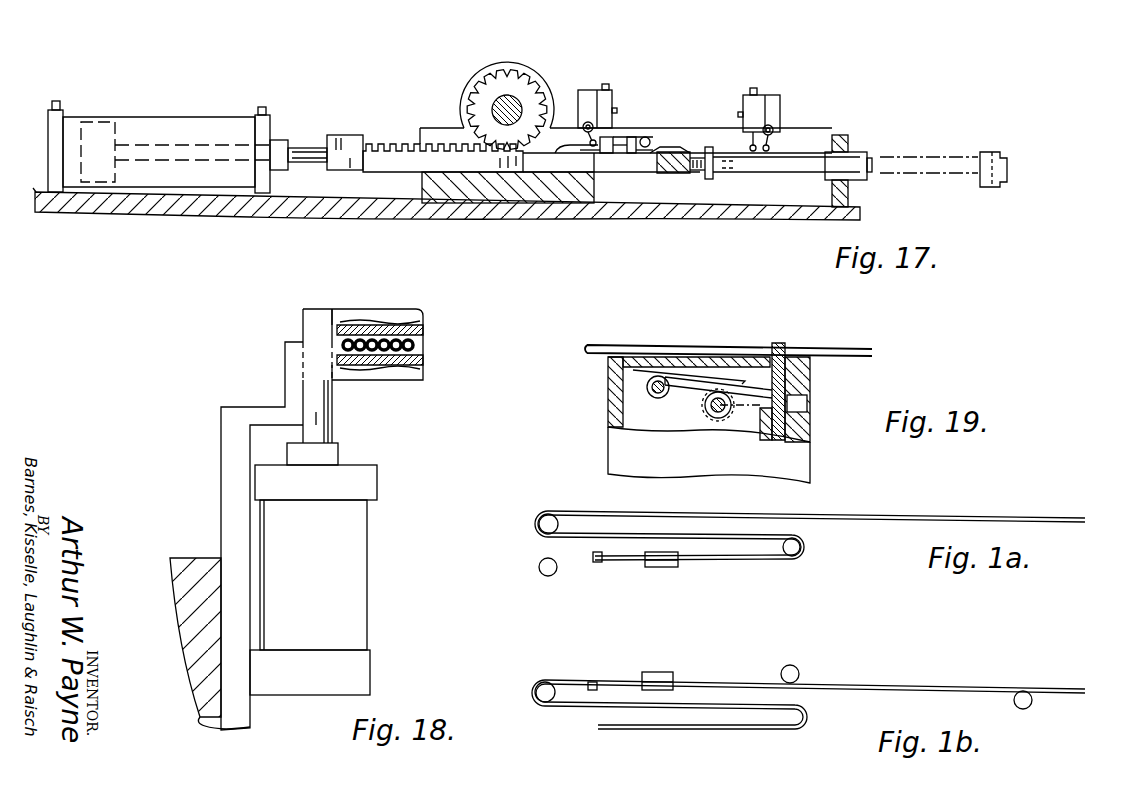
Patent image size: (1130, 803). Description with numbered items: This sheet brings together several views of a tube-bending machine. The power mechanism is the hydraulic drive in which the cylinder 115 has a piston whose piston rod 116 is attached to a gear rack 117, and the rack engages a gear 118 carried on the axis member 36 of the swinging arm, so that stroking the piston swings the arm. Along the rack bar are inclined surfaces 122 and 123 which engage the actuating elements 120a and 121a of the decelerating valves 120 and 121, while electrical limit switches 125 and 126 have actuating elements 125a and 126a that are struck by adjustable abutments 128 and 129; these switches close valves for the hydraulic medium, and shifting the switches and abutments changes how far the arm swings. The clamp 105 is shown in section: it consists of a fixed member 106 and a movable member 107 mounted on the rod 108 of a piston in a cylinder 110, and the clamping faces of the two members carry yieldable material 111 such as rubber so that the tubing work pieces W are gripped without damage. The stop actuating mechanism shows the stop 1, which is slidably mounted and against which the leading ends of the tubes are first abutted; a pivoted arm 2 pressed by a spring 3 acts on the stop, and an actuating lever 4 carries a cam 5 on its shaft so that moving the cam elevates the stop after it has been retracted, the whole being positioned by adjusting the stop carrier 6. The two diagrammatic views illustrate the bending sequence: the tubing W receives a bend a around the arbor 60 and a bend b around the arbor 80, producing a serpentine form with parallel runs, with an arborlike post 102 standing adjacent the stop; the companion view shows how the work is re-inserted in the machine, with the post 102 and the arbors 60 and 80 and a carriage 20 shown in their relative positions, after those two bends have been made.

In FIG. 17, the cylinder 115 is at (152, 120).
In FIG. 17, the piston rod 116 is at (293, 148).
In FIG. 17, the gear rack 117 is at (388, 140).
In FIG. 17, the axis member 36 is at (503, 96).
In FIG. 17, the gear 118 is at (513, 82).
In FIG. 17, the electrical limit switch 125 is at (590, 120).
In FIG. 17, the actuating element 125a is at (584, 140).
In FIG. 17, the decelerating valve 120 is at (612, 104).
In FIG. 17, the actuating element 120a is at (625, 130).
In FIG. 17, the adjustable abutment 129 is at (648, 138).
In FIG. 17, the inclined surface 123 is at (666, 150).
In FIG. 17, the inclined surface 122 is at (558, 151).
In FIG. 17, the adjustable abutment 128 is at (590, 152).
In FIG. 17, the decelerating valve 121 is at (745, 95).
In FIG. 17, the electrical limit switch 126 is at (772, 95).
In FIG. 17, the actuating element 126a is at (772, 140).
In FIG. 17, the actuating element 121a is at (752, 152).
In FIG. 18, the movable member 107 is at (370, 316).
In FIG. 18, the clamp 105 is at (437, 311).
In FIG. 18, the yieldable material 111 is at (424, 330).
In FIG. 18, the work pieces W is at (420, 345).
In FIG. 19, the work pieces W is at (852, 350).
In FIG. 1A, the work pieces W is at (928, 516).
In FIG. 1B, the work pieces W is at (930, 685).
In FIG. 18, the fixed member 106 is at (405, 378).
In FIG. 18, the rod 108 is at (326, 420).
In FIG. 18, the cylinder 110 is at (356, 561).
In FIG. 19, the spring 3 is at (710, 370).
In FIG. 19, the stop 1 is at (786, 372).
In FIG. 1A, the stop 1 is at (598, 563).
In FIG. 1B, the stop 1 is at (590, 690).
In FIG. 19, the actuating lever 4 is at (788, 404).
In FIG. 19, the pivoted arm 2 is at (675, 390).
In FIG. 19, the cam 5 is at (720, 418).
In FIG. 19, the stop carrier 6 is at (805, 451).
In FIG. 1A, the bend a is at (545, 512).
In FIG. 1B, the bend a is at (534, 691).
In FIG. 1A, the arbor 60 is at (538, 526).
In FIG. 1B, the arbor 60 is at (1032, 703).
In FIG. 1A, the arborlike post 102 is at (539, 567).
In FIG. 1B, the arborlike post 102 is at (550, 686).
In FIG. 1A, the carriage 20 is at (668, 567).
In FIG. 1B, the carriage 20 is at (673, 673).
In FIG. 1A, the arbor 80 is at (802, 546).
In FIG. 1B, the arbor 80 is at (800, 672).
In FIG. 1A, the bend b is at (800, 553).
In FIG. 1B, the bend b is at (809, 716).